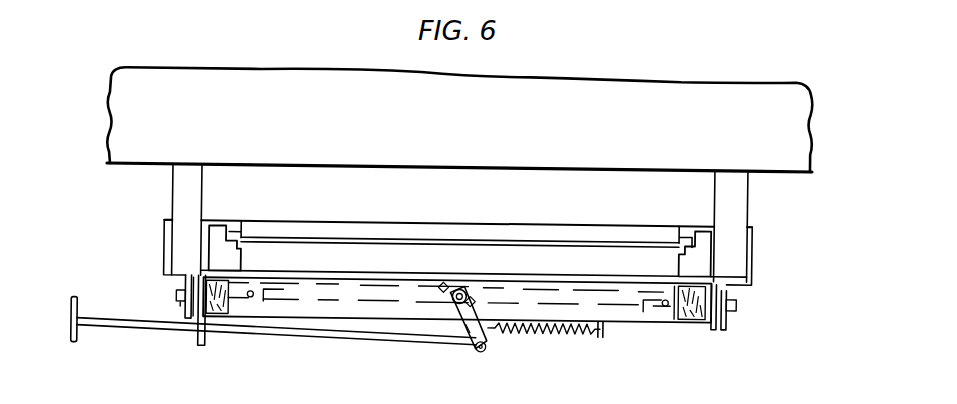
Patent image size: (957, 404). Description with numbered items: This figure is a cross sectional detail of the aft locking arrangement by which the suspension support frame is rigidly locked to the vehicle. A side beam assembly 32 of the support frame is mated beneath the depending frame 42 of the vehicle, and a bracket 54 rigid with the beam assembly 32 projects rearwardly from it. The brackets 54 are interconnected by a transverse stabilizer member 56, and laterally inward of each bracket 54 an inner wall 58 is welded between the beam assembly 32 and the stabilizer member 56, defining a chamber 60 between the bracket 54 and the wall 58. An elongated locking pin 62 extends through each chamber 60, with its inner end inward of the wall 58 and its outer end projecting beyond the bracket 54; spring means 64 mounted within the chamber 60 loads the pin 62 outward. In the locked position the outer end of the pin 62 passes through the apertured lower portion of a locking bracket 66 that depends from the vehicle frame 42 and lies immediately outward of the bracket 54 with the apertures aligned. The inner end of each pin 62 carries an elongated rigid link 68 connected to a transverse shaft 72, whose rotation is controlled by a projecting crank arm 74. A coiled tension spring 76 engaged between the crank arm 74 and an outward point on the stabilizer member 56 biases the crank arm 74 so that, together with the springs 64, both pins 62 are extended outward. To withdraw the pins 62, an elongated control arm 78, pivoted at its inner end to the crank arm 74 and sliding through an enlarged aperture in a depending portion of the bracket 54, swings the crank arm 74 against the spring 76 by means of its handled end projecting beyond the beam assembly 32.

The beam assembly 32 is at (217, 226).
The depending frame 42 is at (745, 205).
The bracket 54 is at (198, 338).
The transverse stabilizer member 56 is at (625, 320).
The inner wall 58 is at (679, 316).
The chamber 60 is at (228, 272).
The locking pin 62 is at (177, 295).
The spring means 64 is at (227, 313).
The locking bracket 66 is at (754, 258).
The rigid link 68 is at (333, 285).
The transverse shaft 72 is at (466, 286).
The crank arm 74 is at (472, 343).
The coiled tension spring 76 is at (530, 331).
The control arm 78 is at (281, 336).